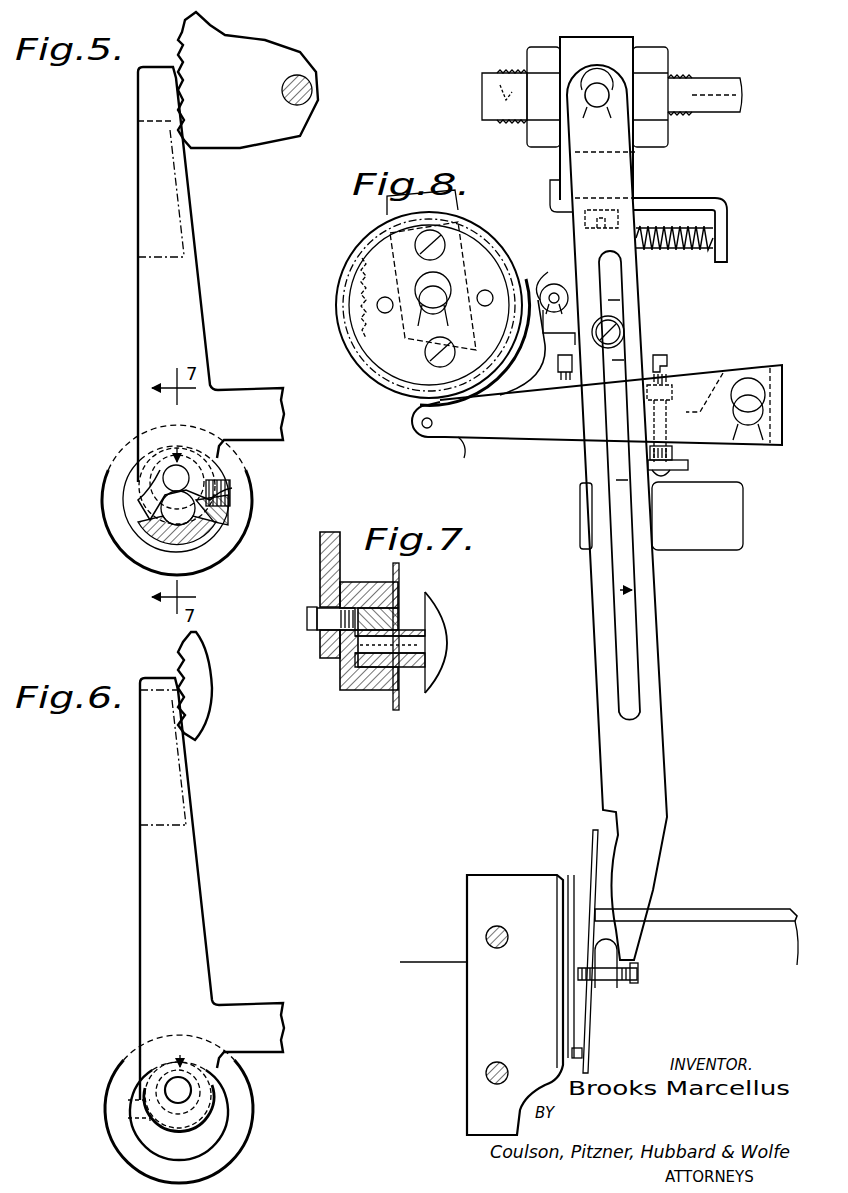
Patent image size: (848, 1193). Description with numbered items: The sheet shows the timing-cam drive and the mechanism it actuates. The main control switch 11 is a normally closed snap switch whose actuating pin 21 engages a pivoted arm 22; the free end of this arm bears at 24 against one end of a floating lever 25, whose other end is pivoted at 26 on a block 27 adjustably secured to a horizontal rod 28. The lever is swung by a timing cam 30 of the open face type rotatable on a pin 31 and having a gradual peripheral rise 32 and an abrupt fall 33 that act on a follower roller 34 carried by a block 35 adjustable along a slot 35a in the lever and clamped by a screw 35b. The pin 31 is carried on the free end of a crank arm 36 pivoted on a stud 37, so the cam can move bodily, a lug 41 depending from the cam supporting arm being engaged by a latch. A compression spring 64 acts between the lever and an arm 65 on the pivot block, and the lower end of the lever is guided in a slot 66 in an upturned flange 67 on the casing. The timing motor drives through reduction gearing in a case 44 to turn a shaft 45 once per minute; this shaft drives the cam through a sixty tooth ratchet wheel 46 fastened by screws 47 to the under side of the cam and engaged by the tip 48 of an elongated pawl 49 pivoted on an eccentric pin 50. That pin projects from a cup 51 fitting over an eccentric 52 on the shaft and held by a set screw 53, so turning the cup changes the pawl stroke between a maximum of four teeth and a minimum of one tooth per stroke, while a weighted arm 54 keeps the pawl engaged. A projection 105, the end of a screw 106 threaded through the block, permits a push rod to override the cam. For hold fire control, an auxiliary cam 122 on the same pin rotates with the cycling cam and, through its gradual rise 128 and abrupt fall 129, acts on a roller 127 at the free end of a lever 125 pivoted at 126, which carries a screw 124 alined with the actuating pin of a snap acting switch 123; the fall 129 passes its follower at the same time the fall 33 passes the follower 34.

In FIG. 8, the main control switch 11 is at (468, 906).
In FIG. 8, the actuating pin 21 is at (572, 1052).
In FIG. 8, the arm 22 is at (590, 1010).
In FIG. 8, the bearing point 24 is at (616, 852).
In FIG. 8, the floating lever 25 is at (644, 755).
In FIG. 8, the pivot 26 is at (602, 95).
In FIG. 8, the block 27 is at (573, 55).
In FIG. 8, the horizontal rod 28 is at (482, 94).
In FIG. 8, the timing cam 30 is at (514, 352).
In FIG. 5, the pin 31 is at (302, 80).
In FIG. 8, the pin 31 is at (440, 292).
In FIG. 8, the peripheral rise 32 is at (508, 392).
In FIG. 8, the fall 33 is at (534, 280).
In FIG. 8, the follower roller 34 is at (544, 284).
In FIG. 8, the block 35 is at (566, 343).
In FIG. 8, the slot 35a is at (606, 464).
In FIG. 8, the clamping screw 35b is at (625, 332).
In FIG. 8, the crank arm 36 is at (387, 200).
In FIG. 8, the stud 37 is at (440, 215).
In FIG. 8, the lug 41 is at (378, 292).
In FIG. 7, the case 44 is at (440, 665).
In FIG. 5, the shaft 45 is at (214, 545).
In FIG. 6, the shaft 45 is at (150, 1150).
In FIG. 7, the shaft 45 is at (416, 640).
In FIG. 5, the ratchet wheel 46 is at (228, 132).
In FIG. 6, the ratchet wheel 46 is at (206, 704).
In FIG. 8, the ratchet wheel 46 is at (356, 306).
In FIG. 8, the screws 47 is at (446, 238).
In FIG. 5, the tip 48 is at (168, 73).
In FIG. 6, the tip 48 is at (165, 678).
In FIG. 5, the pawl 49 is at (146, 310).
In FIG. 6, the pawl 49 is at (146, 933).
In FIG. 7, the pawl 49 is at (320, 551).
In FIG. 5, the eccentric pin 50 is at (170, 470).
In FIG. 6, the eccentric pin 50 is at (170, 1088).
In FIG. 7, the eccentric pin 50 is at (307, 618).
In FIG. 5, the cup 51 is at (160, 543).
In FIG. 6, the cup 51 is at (216, 1133).
In FIG. 7, the cup 51 is at (352, 692).
In FIG. 5, the eccentric 52 is at (222, 512).
In FIG. 6, the eccentric 52 is at (236, 1160).
In FIG. 7, the eccentric 52 is at (382, 612).
In FIG. 5, the set screw 53 is at (232, 496).
In FIG. 6, the set screw 53 is at (140, 1118).
In FIG. 5, the weighted arm 54 is at (266, 402).
In FIG. 6, the weighted arm 54 is at (264, 1015).
In FIG. 8, the compression spring 64 is at (690, 247).
In FIG. 8, the arm 65 is at (727, 222).
In FIG. 8, the slot 66 is at (700, 915).
In FIG. 8, the upturned flange 67 is at (740, 924).
In FIG. 8, the projection 105 is at (560, 378).
In FIG. 8, the screw 106 is at (668, 360).
In FIG. 8, the auxiliary cam 122 is at (398, 355).
In FIG. 8, the snap acting switch 123 is at (743, 498).
In FIG. 8, the screw 124 is at (672, 452).
In FIG. 8, the lever 125 is at (509, 437).
In FIG. 8, the pivot 126 is at (750, 404).
In FIG. 8, the roller 127 is at (420, 440).
In FIG. 8, the rise 128 is at (342, 328).
In FIG. 8, the fall 129 is at (463, 450).